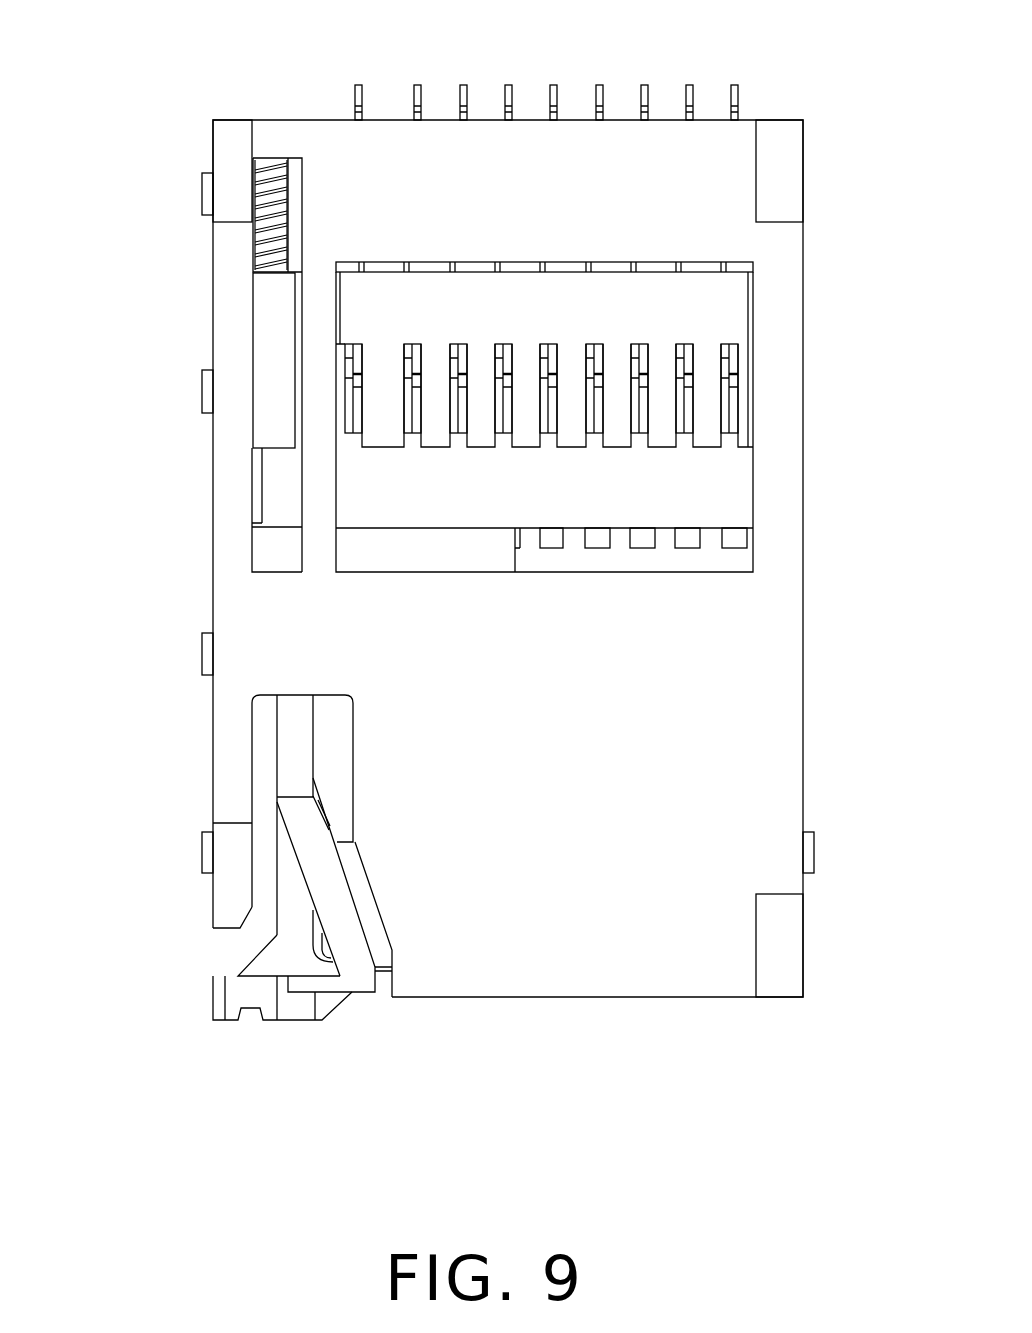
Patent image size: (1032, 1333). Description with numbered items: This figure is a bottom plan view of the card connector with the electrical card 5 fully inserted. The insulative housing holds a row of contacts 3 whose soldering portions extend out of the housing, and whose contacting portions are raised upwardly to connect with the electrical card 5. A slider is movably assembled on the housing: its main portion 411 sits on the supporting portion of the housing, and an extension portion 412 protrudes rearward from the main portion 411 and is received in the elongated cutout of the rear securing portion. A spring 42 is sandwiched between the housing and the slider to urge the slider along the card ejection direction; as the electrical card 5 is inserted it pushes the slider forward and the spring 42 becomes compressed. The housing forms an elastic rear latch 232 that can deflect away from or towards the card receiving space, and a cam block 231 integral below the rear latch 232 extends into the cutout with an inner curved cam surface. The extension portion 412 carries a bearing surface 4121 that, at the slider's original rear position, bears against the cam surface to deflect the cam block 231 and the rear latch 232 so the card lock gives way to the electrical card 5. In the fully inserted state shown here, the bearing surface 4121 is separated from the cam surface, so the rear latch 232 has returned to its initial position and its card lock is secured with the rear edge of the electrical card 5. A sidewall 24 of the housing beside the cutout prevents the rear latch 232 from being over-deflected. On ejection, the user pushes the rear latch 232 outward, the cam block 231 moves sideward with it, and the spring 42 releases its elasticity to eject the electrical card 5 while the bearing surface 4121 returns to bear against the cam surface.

The contacts 3 is at (734, 98).
The spring 42 is at (258, 208).
The main portion 411 is at (722, 310).
The sidewall 24 is at (237, 740).
The extension portion 412 is at (338, 756).
The bearing surface 4121 is at (327, 826).
The rear latch 232 is at (250, 988).
The cam block 231 is at (355, 970).
The electrical card 5 is at (378, 938).